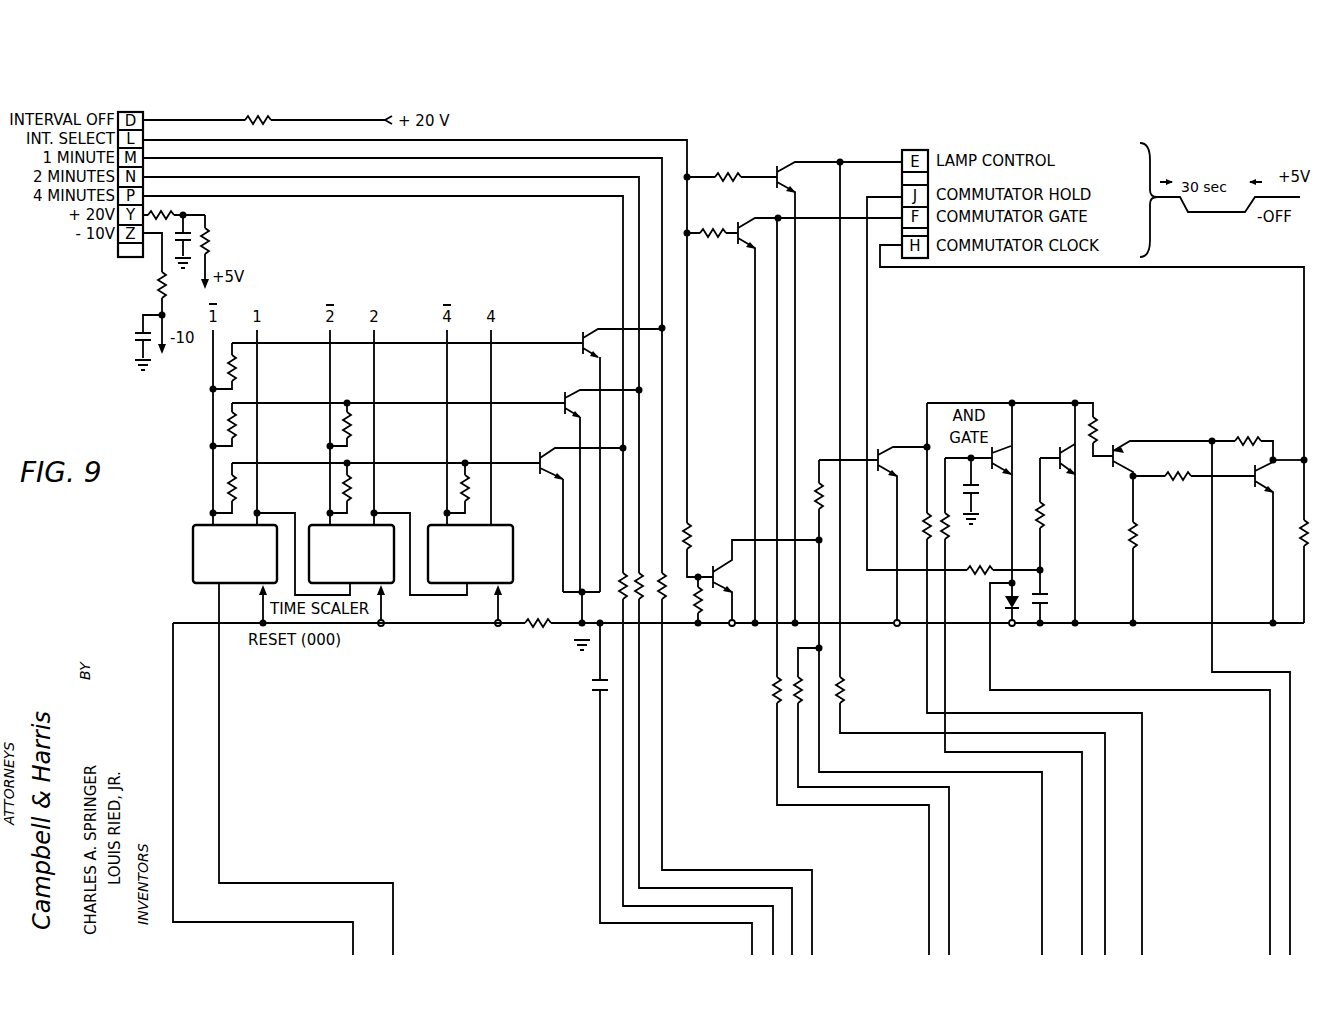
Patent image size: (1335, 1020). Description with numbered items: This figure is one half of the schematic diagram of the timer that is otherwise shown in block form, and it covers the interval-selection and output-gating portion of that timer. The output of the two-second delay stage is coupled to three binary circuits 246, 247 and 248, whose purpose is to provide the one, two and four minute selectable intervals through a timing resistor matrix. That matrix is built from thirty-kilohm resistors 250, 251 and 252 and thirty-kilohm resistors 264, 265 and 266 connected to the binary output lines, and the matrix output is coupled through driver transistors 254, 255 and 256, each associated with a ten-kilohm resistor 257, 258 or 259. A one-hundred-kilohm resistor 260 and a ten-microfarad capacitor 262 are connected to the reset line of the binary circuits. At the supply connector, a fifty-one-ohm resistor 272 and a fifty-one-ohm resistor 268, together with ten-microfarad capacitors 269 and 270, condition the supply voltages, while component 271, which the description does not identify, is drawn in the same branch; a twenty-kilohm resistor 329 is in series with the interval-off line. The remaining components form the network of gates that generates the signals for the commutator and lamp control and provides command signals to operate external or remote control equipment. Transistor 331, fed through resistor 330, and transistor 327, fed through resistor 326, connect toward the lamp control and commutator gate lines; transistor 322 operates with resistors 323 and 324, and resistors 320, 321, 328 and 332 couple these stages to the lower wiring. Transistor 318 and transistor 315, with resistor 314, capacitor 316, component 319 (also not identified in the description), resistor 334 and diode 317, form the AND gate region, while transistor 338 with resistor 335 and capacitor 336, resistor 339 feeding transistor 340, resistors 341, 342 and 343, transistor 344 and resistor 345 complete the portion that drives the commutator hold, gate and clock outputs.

The binary circuit 246 is at (262, 740).
The binary circuit 247 is at (378, 574).
The binary circuit 248 is at (492, 554).
The resistor 250 is at (254, 488).
The resistor 251 is at (254, 424).
The resistor 252 is at (254, 366).
The driver transistor 254 is at (577, 506).
The driver transistor 255 is at (590, 481).
The driver transistor 256 is at (618, 444).
The resistor 257 is at (735, 764).
The resistor 258 is at (713, 764).
The resistor 259 is at (696, 764).
The resistor 260 is at (524, 637).
The capacitor 262 is at (645, 789).
The resistor 264 is at (372, 424).
The resistor 265 is at (372, 488).
The resistor 266 is at (488, 488).
The resistor 268 is at (185, 316).
The capacitor 269 is at (124, 342).
The capacitor 270 is at (139, 274).
The resistor 271 is at (228, 252).
The resistor 272 is at (199, 211).
The resistor 314 is at (1011, 706).
The transistor 315 is at (1024, 442).
The capacitor 316 is at (991, 491).
The diode 317 is at (1022, 619).
The transistor 318 is at (901, 517).
The resistor 319 is at (997, 734).
The resistor 320 is at (840, 537).
The resistor 321 is at (837, 801).
The transistor 322 is at (764, 567).
The resistor 323 is at (722, 615).
The resistor 324 is at (707, 528).
The resistor 326 is at (712, 250).
The transistor 327 is at (753, 408).
The resistor 328 is at (827, 586).
The resistor 329 is at (267, 107).
The resistor 330 is at (732, 158).
The transistor 331 is at (808, 379).
The resistor 332 is at (970, 558).
The resistor 334 is at (995, 585).
The resistor 335 is at (1076, 514).
The capacitor 336 is at (1074, 596).
The transistor 338 is at (1048, 455).
The resistor 339 is at (1095, 413).
The transistor 340 is at (1174, 444).
The resistor 341 is at (1155, 549).
The resistor 342 is at (1194, 466).
The resistor 343 is at (1247, 431).
The transistor 344 is at (1248, 542).
The resistor 345 is at (1266, 543).